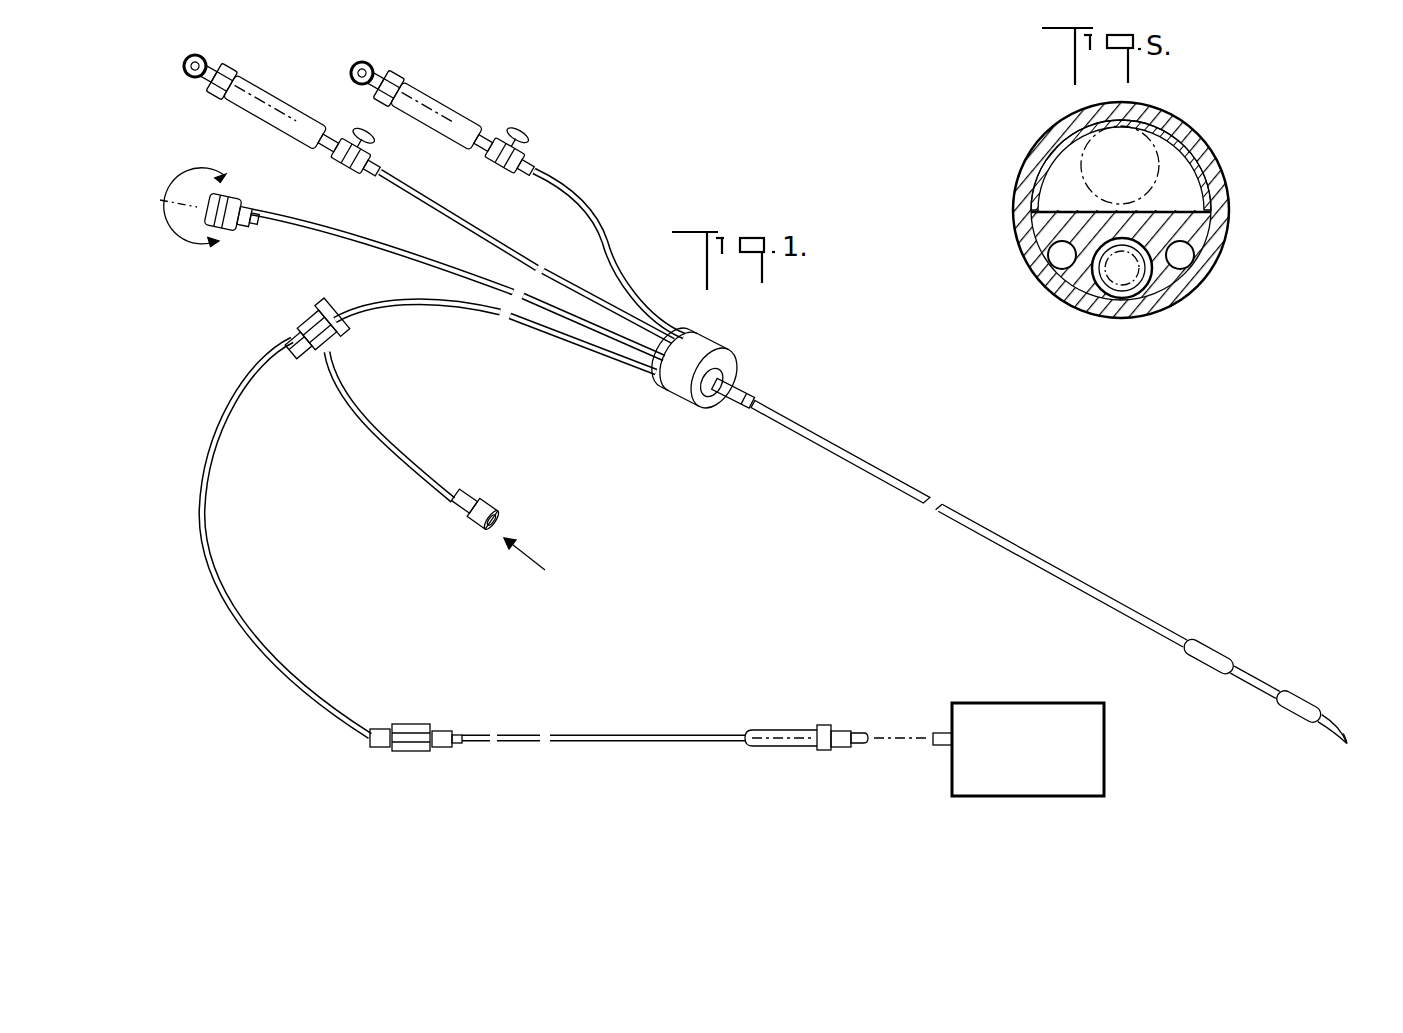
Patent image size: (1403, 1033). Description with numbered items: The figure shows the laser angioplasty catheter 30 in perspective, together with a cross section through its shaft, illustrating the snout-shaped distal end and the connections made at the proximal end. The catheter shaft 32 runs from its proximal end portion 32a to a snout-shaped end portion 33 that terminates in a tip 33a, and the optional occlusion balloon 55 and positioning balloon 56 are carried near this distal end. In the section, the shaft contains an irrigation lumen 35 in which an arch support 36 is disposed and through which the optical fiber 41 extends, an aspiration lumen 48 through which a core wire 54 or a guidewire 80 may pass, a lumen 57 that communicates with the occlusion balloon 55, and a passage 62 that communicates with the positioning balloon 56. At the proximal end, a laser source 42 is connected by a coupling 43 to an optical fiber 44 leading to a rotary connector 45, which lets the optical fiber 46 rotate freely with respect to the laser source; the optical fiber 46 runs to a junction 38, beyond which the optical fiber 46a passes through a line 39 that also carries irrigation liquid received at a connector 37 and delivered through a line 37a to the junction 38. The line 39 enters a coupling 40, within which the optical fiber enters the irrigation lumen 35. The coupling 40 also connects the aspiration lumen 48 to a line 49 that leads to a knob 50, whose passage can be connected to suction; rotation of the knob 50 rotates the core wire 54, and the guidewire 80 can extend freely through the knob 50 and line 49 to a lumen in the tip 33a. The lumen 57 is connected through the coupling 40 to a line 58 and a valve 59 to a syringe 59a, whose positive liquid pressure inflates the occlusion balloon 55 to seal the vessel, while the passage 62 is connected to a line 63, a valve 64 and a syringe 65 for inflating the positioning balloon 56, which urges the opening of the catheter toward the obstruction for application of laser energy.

In FIG. 1, the laser angioplasty catheter 30 is at (1069, 590).
In FIG. 5, the catheter shaft 32 is at (1218, 158).
In FIG. 1, the proximal end portion 32a is at (770, 408).
In FIG. 1, the snout-shaped end portion 33 is at (1344, 723).
In FIG. 1, the tip 33a is at (1352, 746).
In FIG. 5, the irrigation lumen 35 is at (1229, 212).
In FIG. 5, the arch support 36 is at (1040, 162).
In FIG. 1, the connector 37 is at (484, 503).
In FIG. 1, the line 37a is at (372, 427).
In FIG. 1, the junction 38 is at (310, 320).
In FIG. 1, the line 39 is at (595, 350).
In FIG. 1, the coupling 40 is at (722, 352).
In FIG. 5, the optical fiber 41 is at (1158, 142).
In FIG. 1, the laser source 42 is at (985, 705).
In FIG. 1, the coupling 43 is at (937, 737).
In FIG. 1, the optical fiber 44 is at (855, 748).
In FIG. 1, the rotary connector 45 is at (828, 730).
In FIG. 1, the optical fiber 46 is at (525, 731).
In FIG. 1, the optical fiber 46a is at (242, 618).
In FIG. 5, the aspiration lumen 48 is at (1103, 300).
In FIG. 1, the line 49 is at (347, 237).
In FIG. 1, the knob 50 is at (229, 228).
In FIG. 5, the core wire 54 is at (1162, 272).
In FIG. 1, the occlusion balloon 55 is at (1213, 648).
In FIG. 1, the positioning balloon 56 is at (1313, 707).
In FIG. 5, the lumen 57 is at (1190, 256).
In FIG. 1, the line 58 is at (605, 230).
In FIG. 1, the valve 59 is at (530, 148).
In FIG. 1, the syringe 59a is at (450, 108).
In FIG. 5, the passage 62 is at (1048, 263).
In FIG. 1, the line 63 is at (518, 254).
In FIG. 1, the valve 64 is at (370, 158).
In FIG. 1, the syringe 65 is at (273, 102).
In FIG. 1, the guidewire 80 is at (180, 186).
In FIG. 5, the guidewire 80 is at (1168, 308).